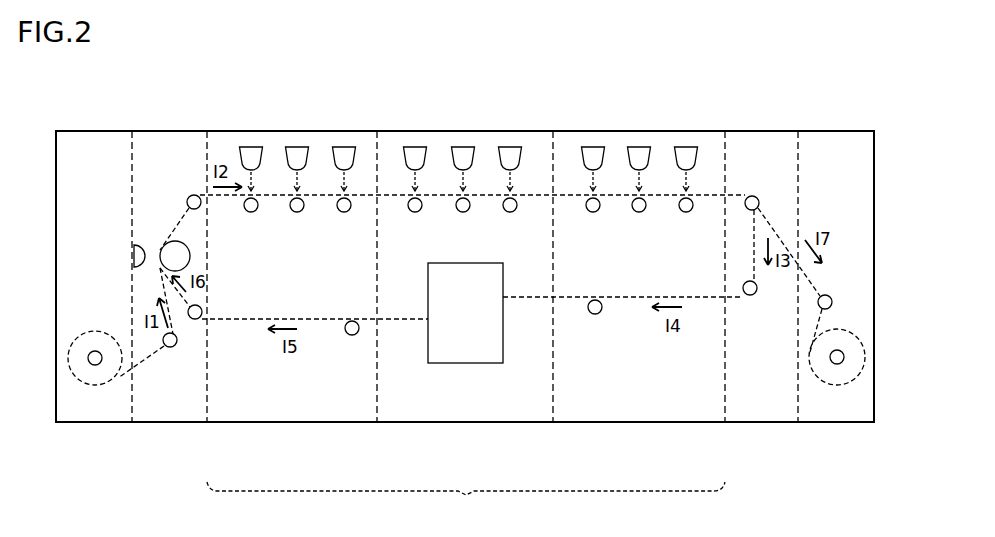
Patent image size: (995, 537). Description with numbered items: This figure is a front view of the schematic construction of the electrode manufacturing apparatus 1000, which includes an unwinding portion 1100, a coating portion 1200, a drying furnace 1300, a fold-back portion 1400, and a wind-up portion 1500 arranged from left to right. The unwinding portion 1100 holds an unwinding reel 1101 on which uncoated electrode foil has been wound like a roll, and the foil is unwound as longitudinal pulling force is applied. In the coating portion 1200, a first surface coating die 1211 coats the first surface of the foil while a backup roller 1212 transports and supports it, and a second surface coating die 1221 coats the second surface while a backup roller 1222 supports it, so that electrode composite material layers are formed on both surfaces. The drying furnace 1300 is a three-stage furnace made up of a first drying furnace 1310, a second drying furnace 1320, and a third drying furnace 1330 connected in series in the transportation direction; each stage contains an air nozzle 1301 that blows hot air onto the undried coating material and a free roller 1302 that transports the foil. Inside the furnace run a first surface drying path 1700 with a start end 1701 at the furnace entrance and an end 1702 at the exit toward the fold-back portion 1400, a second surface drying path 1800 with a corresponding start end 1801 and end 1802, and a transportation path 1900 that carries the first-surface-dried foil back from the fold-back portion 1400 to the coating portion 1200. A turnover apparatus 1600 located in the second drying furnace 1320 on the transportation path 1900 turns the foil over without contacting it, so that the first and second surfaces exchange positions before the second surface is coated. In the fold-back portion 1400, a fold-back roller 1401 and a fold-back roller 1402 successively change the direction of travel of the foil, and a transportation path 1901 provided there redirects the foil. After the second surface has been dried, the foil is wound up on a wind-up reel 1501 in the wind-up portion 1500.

The electrode manufacturing apparatus 1000 is at (684, 131).
The unwinding portion 1100 is at (92, 423).
The unwinding reel 1101 is at (97, 331).
The coating portion 1200 is at (163, 423).
The first surface coating die 1211 is at (104, 233).
The second surface coating die 1221 is at (134, 253).
The backup roller 1212 is at (225, 270).
The backup roller 1222 is at (191, 259).
The drying furnace 1300 is at (466, 503).
The air nozzle 1301 is at (297, 146).
The roller 1302 is at (297, 212).
The first drying furnace 1310 is at (287, 423).
The second drying furnace 1320 is at (463, 423).
The third drying furnace 1330 is at (642, 423).
The fold-back portion 1400 is at (763, 423).
The fold-back roller 1401 is at (745, 208).
The fold-back roller 1402 is at (748, 296).
The wind-up portion 1500 is at (838, 423).
The wind-up reel 1501 is at (830, 357).
The turnover apparatus 1600 is at (485, 364).
The first surface drying path 1700 is at (516, 228).
The second surface drying path 1800 is at (541, 197).
The start end of first surface drying path 1701 is at (169, 172).
The start end of second surface drying path 1801 is at (190, 196).
The end of first surface drying path 1702 is at (762, 172).
The end of second surface drying path 1802 is at (733, 188).
The transportation path 1900 is at (312, 321).
The transportation path 1901 is at (758, 285).